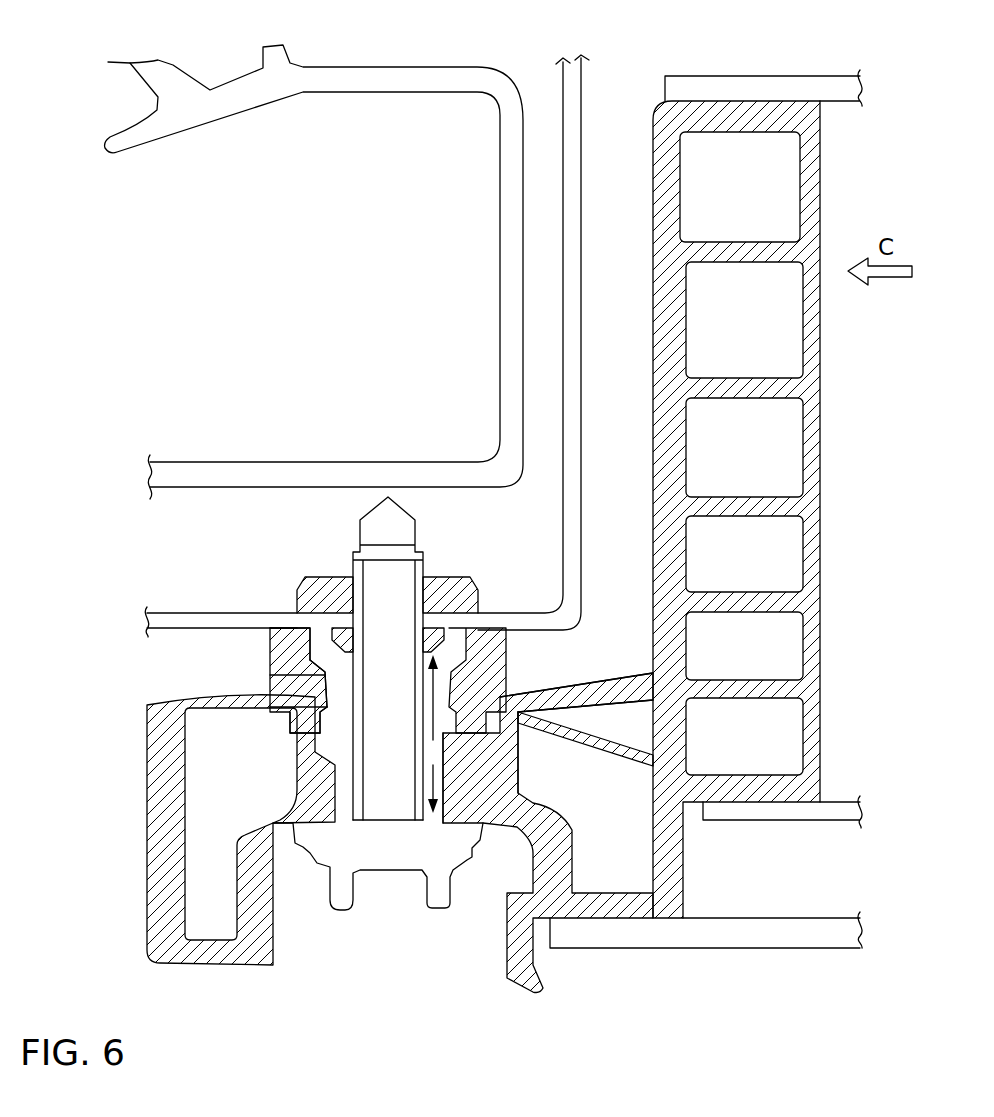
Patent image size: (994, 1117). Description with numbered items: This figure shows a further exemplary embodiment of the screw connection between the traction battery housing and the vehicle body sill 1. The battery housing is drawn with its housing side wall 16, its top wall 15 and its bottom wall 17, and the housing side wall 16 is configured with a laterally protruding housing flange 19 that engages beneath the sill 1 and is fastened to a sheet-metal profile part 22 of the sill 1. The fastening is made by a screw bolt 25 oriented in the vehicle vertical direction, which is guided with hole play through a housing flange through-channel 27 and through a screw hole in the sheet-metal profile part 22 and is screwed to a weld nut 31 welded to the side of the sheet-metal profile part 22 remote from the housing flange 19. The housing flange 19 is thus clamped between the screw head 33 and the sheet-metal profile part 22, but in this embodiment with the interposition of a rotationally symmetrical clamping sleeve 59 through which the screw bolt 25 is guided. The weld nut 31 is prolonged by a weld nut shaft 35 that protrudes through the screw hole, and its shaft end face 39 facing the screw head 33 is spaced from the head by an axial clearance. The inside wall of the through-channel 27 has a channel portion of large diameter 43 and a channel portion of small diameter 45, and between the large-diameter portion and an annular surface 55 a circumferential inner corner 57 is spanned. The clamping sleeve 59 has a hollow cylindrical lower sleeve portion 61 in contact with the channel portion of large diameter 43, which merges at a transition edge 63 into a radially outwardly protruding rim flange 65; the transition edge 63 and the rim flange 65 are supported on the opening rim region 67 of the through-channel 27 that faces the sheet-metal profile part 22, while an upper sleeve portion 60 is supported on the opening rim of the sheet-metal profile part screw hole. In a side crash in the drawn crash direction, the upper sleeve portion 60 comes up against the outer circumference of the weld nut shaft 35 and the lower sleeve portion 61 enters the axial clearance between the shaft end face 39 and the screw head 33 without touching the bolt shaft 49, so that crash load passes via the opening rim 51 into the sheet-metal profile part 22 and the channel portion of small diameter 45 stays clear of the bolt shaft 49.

The sill 1 is at (583, 92).
The top wall 15 is at (822, 77).
The housing side wall 16 is at (818, 188).
The bottom wall 17 is at (847, 820).
The housing flange 19 is at (150, 888).
The sheet-metal profile part 22 is at (182, 613).
The screw bolt 25 is at (458, 962).
The housing flange through-channel 27 is at (888, 640).
The weld nut 31 is at (470, 590).
The screw head 33 is at (437, 853).
The weld nut shaft 35 is at (433, 632).
The shaft end face 39 is at (347, 650).
The channel portion of large diameter 43 is at (462, 725).
The channel portion of small diameter 45 is at (443, 792).
The bolt shaft 49 is at (388, 768).
The opening rim 51 is at (333, 623).
The annular surface 55 is at (453, 757).
The circumferential inner corner 57 is at (460, 752).
The clamping sleeve 59 is at (80, 633).
The upper sleeve portion 60 is at (297, 648).
The lower sleeve portion 61 is at (327, 723).
The transition edge 63 is at (320, 695).
The rim flange 65 is at (283, 675).
The opening rim region 67 is at (490, 695).